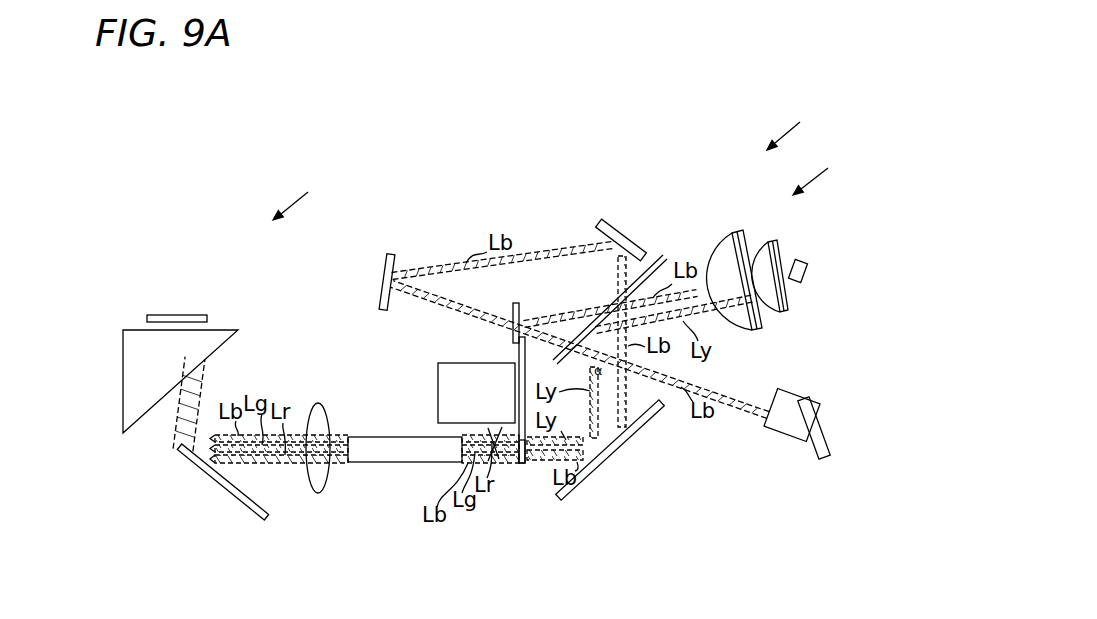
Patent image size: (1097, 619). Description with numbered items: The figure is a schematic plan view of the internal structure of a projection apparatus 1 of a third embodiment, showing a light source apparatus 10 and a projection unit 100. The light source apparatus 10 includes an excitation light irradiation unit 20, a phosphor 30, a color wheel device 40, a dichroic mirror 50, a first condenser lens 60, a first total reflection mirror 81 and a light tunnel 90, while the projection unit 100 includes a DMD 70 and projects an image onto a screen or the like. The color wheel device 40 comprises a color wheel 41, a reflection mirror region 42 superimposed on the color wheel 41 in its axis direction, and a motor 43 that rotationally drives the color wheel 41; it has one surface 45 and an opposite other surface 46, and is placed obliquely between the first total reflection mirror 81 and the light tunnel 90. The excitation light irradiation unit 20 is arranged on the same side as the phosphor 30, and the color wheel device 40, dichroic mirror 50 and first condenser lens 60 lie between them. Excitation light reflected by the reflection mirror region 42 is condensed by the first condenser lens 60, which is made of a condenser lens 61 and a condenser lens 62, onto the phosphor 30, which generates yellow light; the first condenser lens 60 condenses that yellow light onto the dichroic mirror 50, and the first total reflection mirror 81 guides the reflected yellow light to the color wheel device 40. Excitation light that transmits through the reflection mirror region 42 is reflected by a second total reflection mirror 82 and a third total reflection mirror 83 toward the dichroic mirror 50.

The projection apparatus 1 is at (796, 120).
The light source apparatus 10 is at (829, 167).
The projection unit 100 is at (317, 192).
The excitation light irradiation unit 20 is at (829, 421).
The phosphor 30 is at (805, 260).
The color wheel device 40 is at (510, 542).
The color wheel 41 is at (515, 463).
The reflection mirror region 42 is at (520, 303).
The motor 43 is at (497, 463).
The one surface 45 is at (527, 465).
The other surface 46 is at (522, 463).
The dichroic mirror 50 is at (664, 258).
The first condenser lens 60 is at (855, 288).
The condenser lens 61 is at (762, 331).
The condenser lens 62 is at (788, 311).
The DMD 70 is at (186, 315).
The first total reflection mirror 81 is at (604, 470).
The second total reflection mirror 82 is at (398, 260).
The third total reflection mirror 83 is at (621, 223).
The light tunnel 90 is at (440, 463).